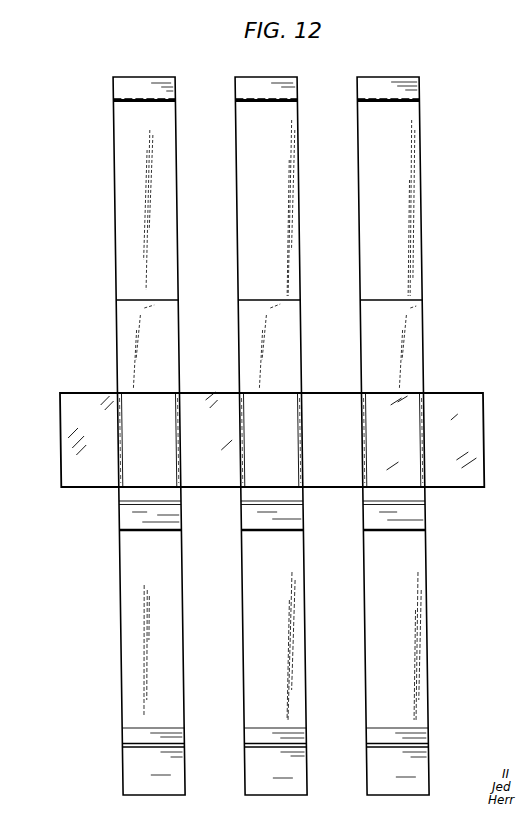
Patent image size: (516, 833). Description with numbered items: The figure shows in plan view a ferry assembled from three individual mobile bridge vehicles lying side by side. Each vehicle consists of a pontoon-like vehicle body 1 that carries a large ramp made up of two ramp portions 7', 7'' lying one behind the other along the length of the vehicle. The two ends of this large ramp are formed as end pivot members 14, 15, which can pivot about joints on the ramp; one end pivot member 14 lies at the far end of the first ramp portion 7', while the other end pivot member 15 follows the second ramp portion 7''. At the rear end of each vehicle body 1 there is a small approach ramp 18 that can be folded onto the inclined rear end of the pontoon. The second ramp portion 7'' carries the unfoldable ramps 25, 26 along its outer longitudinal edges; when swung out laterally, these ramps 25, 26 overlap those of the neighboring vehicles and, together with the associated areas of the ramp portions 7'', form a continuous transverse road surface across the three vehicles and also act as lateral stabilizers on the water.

The vehicle body 1 is at (117, 620).
The end pivot member 14 is at (121, 90).
The ramp portion 7' is at (268, 210).
The ramp portion 7'' is at (268, 346).
The unfoldable ramp 25 is at (62, 428).
The unfoldable ramp 26 is at (199, 393).
The end pivot member 15 is at (117, 519).
The approach ramp 18 is at (119, 766).